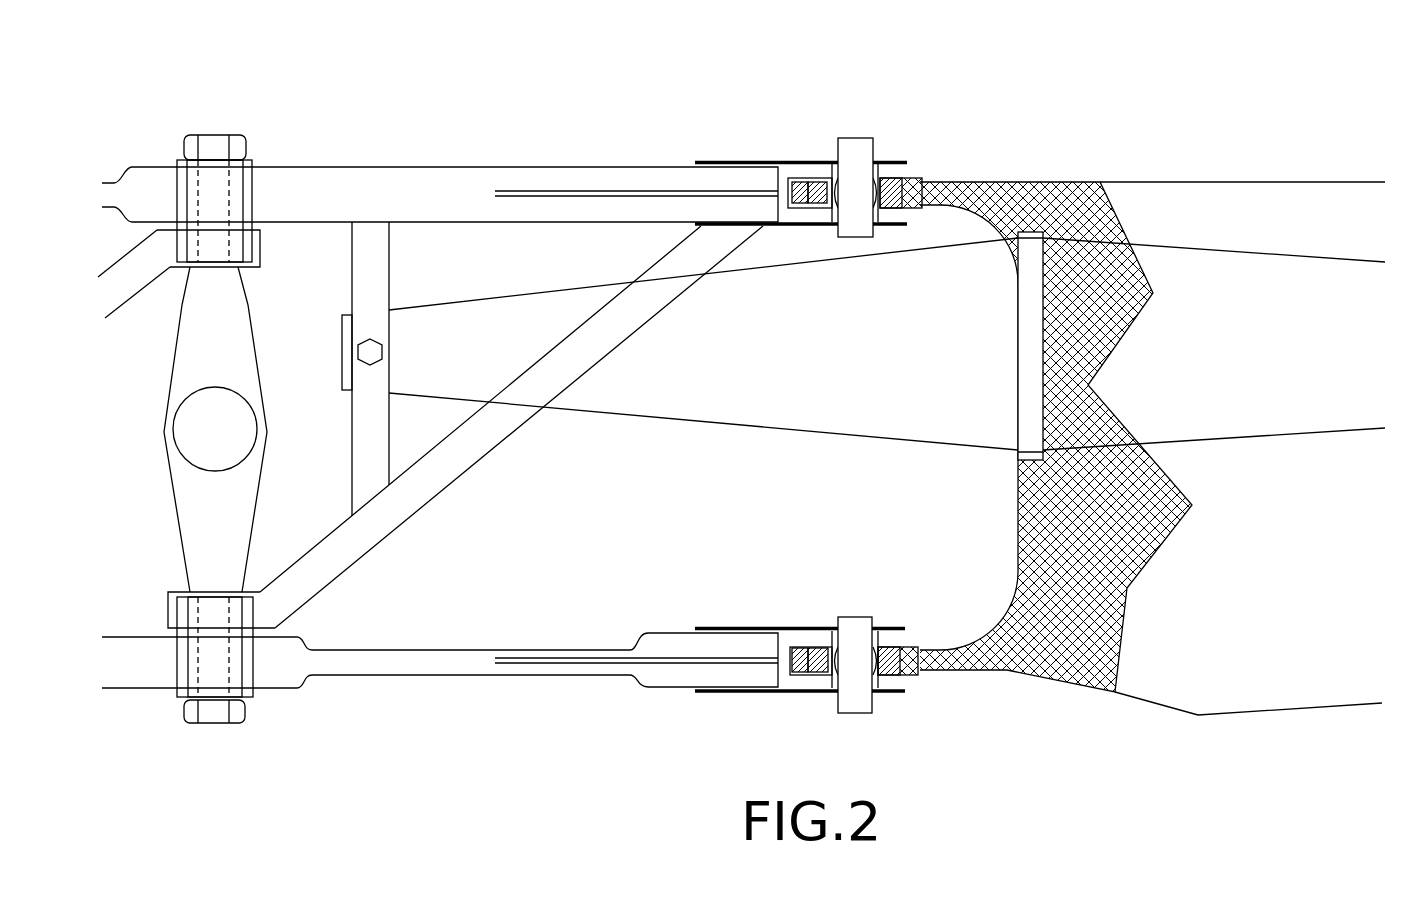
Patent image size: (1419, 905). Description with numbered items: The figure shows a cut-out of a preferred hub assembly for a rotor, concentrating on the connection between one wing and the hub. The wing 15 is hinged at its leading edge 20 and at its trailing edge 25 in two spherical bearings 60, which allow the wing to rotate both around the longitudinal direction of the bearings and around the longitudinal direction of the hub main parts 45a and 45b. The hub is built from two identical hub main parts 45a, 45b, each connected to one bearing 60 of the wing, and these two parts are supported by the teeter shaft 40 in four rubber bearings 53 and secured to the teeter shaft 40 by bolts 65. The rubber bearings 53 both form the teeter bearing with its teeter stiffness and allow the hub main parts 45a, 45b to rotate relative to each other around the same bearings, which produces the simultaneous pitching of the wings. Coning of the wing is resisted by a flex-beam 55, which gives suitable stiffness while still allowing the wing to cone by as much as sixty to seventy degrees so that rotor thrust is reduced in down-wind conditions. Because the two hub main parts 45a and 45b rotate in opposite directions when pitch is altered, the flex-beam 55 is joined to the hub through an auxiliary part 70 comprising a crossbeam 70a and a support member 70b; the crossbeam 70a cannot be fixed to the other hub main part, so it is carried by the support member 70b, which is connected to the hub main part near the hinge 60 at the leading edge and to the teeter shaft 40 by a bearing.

The wing 15 is at (1332, 523).
The leading edge 20 is at (1247, 178).
The trailing edge 25 is at (1315, 712).
The teeter shaft 40 is at (262, 350).
The hub main part 45a is at (458, 690).
The hub main part 45b is at (396, 162).
The rubber bearing 53 is at (222, 192).
The flex-beam 55 is at (703, 390).
The spherical bearing 60 is at (858, 128).
The bolt 65 is at (218, 135).
The auxiliary part 70 is at (511, 425).
The crossbeam 70a is at (367, 465).
The support member 70b is at (373, 519).